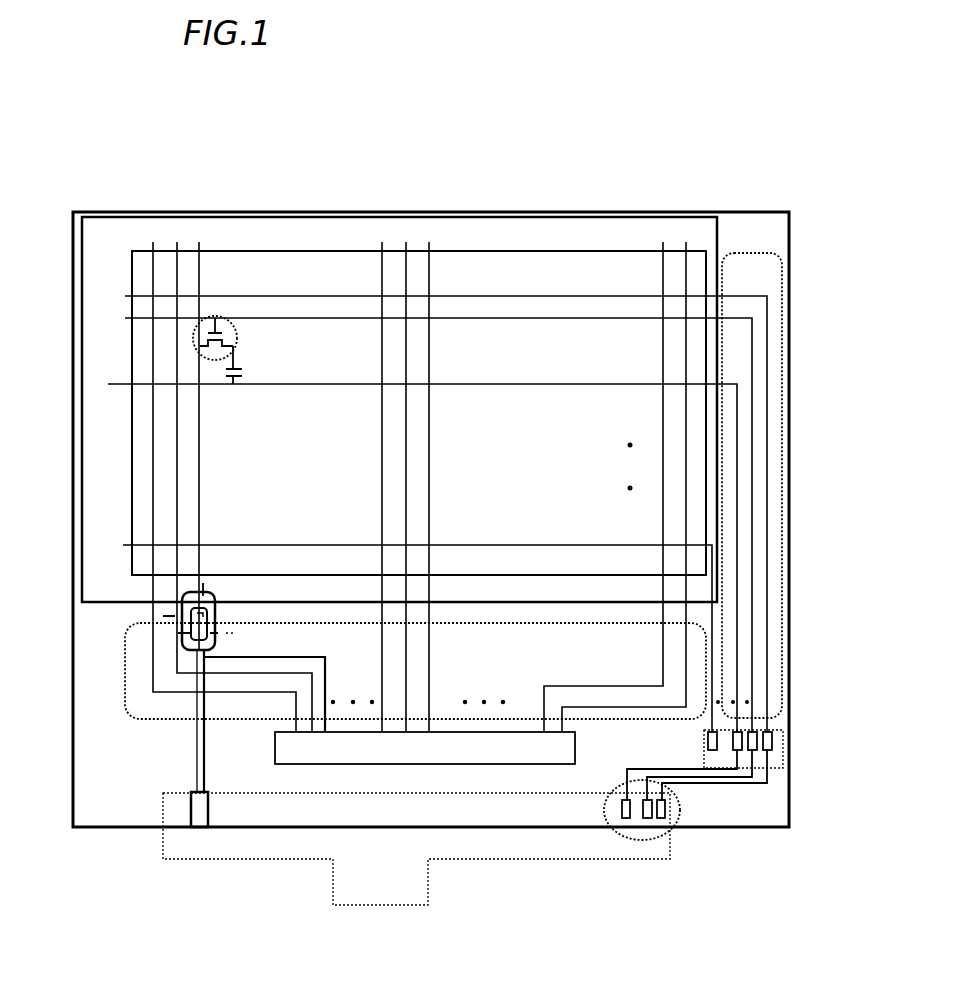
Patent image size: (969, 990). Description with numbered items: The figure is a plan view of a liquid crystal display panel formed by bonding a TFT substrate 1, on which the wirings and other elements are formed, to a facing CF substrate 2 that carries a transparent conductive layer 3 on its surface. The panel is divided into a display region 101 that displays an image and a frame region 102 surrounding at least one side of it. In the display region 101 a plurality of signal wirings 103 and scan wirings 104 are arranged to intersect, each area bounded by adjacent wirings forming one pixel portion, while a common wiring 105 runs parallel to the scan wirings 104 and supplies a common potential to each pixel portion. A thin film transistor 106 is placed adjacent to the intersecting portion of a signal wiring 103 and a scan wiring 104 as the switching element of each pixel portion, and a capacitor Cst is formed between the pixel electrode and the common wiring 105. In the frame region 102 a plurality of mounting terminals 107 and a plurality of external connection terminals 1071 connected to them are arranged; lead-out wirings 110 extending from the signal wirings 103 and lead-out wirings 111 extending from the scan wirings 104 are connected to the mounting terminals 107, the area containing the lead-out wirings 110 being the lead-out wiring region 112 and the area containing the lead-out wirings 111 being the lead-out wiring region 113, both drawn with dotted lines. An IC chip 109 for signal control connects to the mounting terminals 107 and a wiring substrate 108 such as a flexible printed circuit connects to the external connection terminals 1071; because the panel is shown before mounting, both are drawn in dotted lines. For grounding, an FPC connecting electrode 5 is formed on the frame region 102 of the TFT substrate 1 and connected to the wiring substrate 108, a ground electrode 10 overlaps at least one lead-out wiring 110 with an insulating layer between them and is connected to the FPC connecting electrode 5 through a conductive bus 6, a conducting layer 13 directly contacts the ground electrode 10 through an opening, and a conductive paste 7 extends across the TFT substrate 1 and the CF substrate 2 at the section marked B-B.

The TFT substrate 1 is at (431, 455).
The color filter substrate 2 is at (399, 341).
The transparent conductive layer 3 is at (399, 341).
The FPC connecting electrode 5 is at (205, 815).
The conductive bus 6 is at (173, 784).
The conductive paste 7 is at (218, 766).
The ground electrode 10 is at (151, 749).
The conducting layer 13 is at (151, 749).
The display region 101 is at (419, 333).
The frame region 102 is at (765, 404).
The signal wirings 103 is at (419, 411).
The scan wirings 104 is at (446, 411).
The common wiring 105 is at (422, 411).
The thin film transistor 106 is at (216, 318).
The mounting terminals 107 is at (774, 723).
The wiring substrate 108 is at (629, 874).
The IC chip 109 is at (571, 805).
The lead-out wirings 110 is at (330, 720).
The lead-out wirings 111 is at (753, 327).
The lead-out wiring region 112 is at (228, 722).
The lead-out wiring region 113 is at (767, 254).
The external connection terminals 1071 is at (685, 814).
The capacitor Cst is at (243, 366).